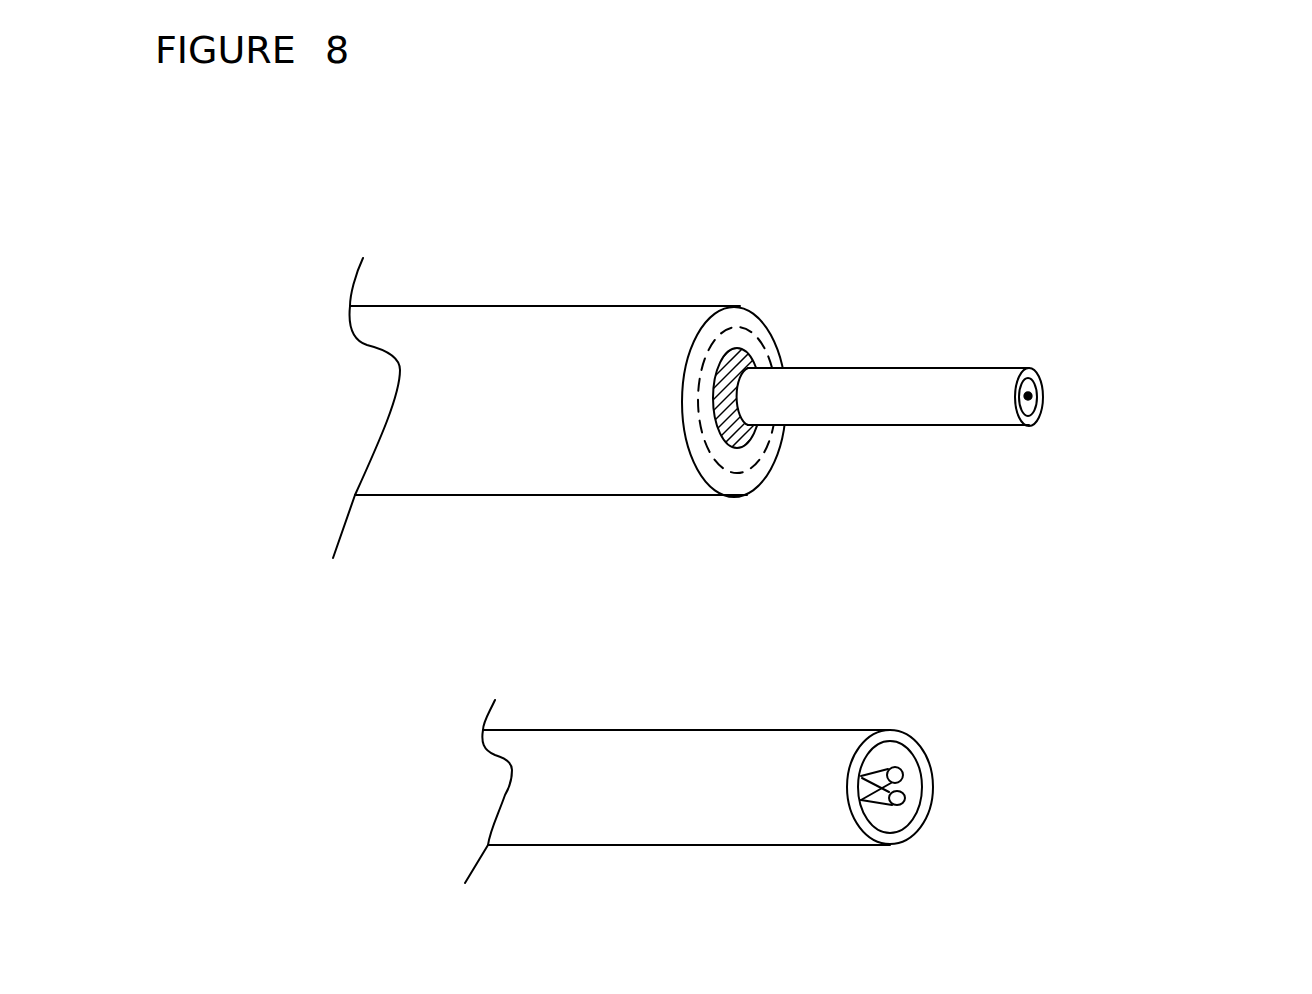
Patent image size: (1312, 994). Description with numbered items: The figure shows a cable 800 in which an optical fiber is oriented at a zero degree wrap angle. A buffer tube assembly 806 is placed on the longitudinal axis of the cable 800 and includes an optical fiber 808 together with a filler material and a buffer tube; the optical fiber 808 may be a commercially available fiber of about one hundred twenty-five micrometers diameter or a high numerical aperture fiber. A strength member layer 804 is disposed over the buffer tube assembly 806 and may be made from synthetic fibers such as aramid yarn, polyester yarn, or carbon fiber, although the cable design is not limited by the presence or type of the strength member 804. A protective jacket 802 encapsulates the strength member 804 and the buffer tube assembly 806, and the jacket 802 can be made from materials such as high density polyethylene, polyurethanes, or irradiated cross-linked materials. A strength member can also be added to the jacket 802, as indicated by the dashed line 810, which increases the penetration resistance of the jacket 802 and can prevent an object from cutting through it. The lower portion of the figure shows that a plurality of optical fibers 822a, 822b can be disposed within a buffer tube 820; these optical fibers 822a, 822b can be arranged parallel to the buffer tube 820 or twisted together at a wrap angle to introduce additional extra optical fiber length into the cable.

The cable 800 is at (1184, 157).
The protective jacket 802 is at (525, 363).
The strength member layer 804 is at (742, 356).
The buffer tube assembly 806 is at (1067, 295).
The optical fiber 808 is at (1030, 397).
The strength member in jacket 810 is at (727, 333).
The buffer tube 820 is at (733, 752).
The optical fiber 822a is at (888, 770).
The optical fiber 822b is at (892, 800).